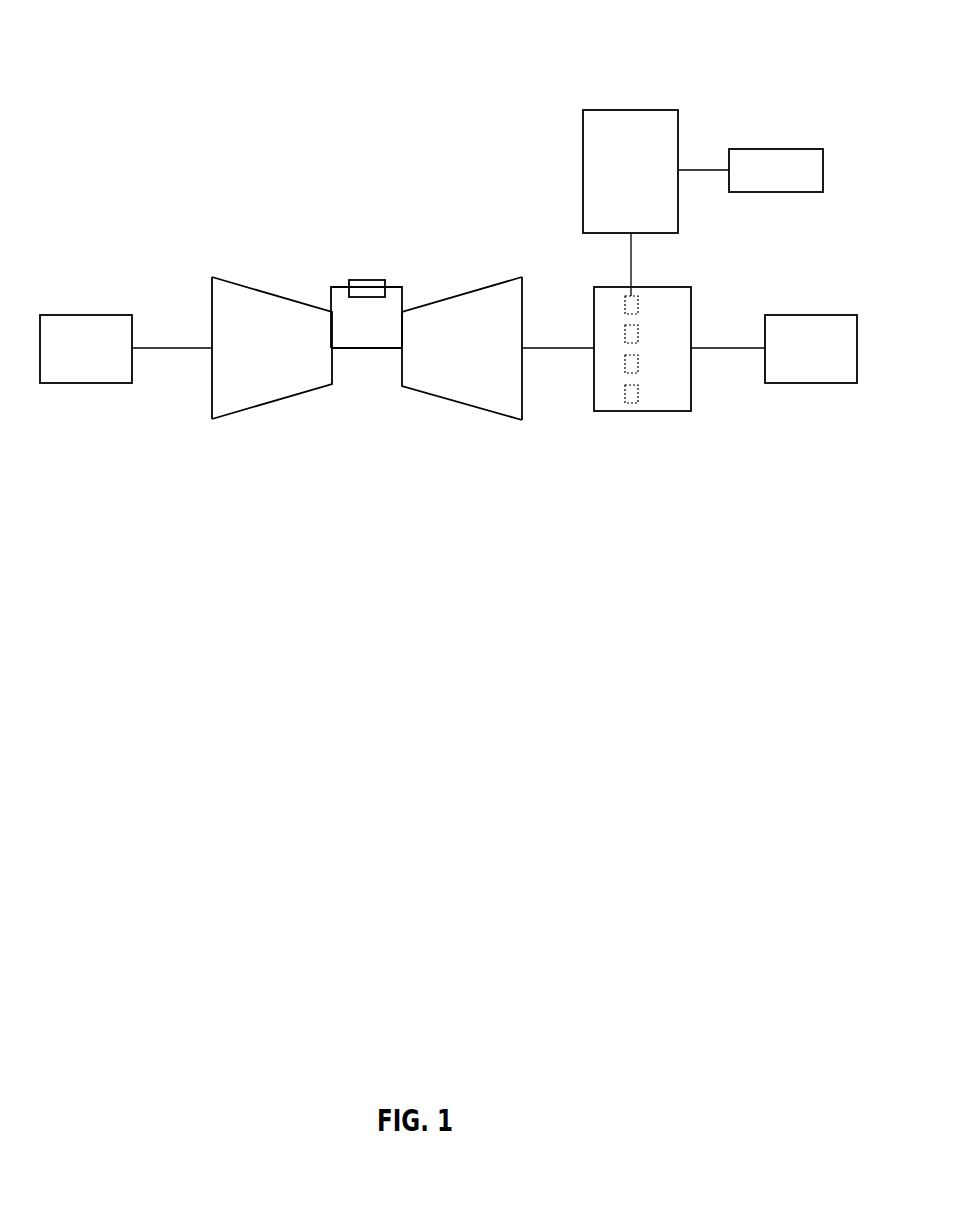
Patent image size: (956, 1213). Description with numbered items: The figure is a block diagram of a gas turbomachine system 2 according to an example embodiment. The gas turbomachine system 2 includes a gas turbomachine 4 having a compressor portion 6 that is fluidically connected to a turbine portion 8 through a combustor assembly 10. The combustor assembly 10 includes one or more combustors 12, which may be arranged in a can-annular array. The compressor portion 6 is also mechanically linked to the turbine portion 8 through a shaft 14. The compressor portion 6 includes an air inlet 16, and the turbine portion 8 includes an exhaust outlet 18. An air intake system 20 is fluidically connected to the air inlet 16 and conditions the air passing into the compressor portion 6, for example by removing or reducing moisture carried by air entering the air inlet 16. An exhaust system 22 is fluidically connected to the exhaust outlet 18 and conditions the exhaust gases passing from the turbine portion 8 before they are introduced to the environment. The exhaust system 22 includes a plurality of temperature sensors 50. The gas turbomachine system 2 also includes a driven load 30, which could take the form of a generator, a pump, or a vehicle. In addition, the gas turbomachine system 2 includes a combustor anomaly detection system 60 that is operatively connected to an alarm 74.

The gas turbomachine system 2 is at (235, 97).
The gas turbomachine 4 is at (405, 218).
The compressor portion 6 is at (235, 369).
The turbine portion 8 is at (491, 364).
The combustor assembly 10 is at (344, 313).
The combustor 12 is at (367, 288).
The shaft 14 is at (365, 352).
The air inlet 16 is at (210, 308).
The exhaust outlet 18 is at (523, 407).
The air intake system 20 is at (80, 372).
The exhaust system 22 is at (679, 361).
The driven load 30 is at (812, 373).
The temperature sensors 50 is at (638, 332).
The combustor anomaly detection system 60 is at (636, 122).
The alarm 74 is at (775, 147).